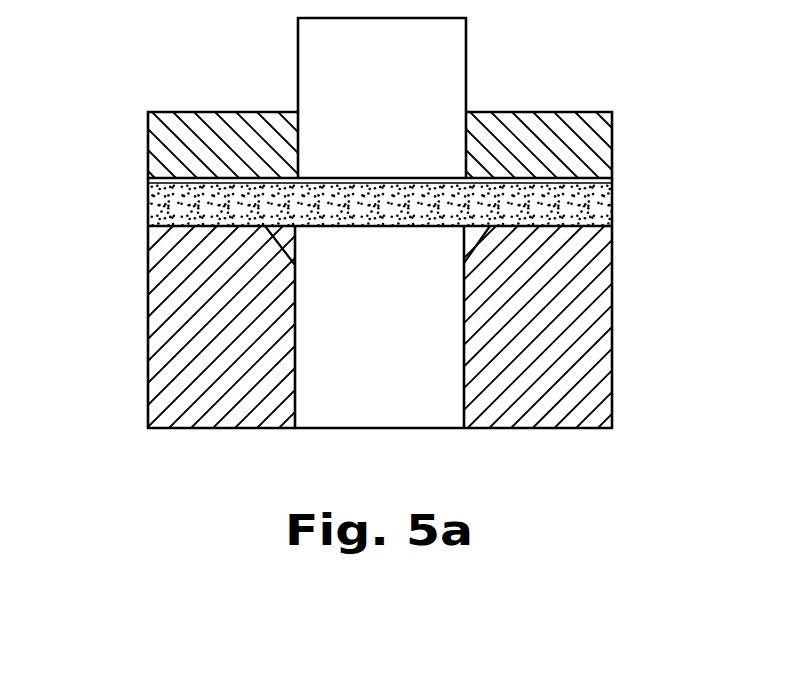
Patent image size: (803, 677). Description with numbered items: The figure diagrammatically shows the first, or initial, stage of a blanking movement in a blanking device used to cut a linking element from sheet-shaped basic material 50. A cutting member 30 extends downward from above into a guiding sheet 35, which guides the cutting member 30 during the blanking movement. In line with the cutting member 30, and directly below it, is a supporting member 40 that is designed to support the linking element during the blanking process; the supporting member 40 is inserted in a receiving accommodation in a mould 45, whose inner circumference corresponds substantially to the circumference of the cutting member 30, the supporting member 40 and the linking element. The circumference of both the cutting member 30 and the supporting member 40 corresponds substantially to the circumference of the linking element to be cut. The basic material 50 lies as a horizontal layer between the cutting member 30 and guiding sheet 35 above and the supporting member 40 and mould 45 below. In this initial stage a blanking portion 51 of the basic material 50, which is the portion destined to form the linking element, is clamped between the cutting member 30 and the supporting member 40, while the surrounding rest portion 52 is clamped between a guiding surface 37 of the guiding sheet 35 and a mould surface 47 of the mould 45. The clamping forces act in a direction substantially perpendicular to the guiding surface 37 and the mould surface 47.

The cutting member 30 is at (453, 67).
The guiding sheet 35 is at (604, 131).
The basic material 50 is at (590, 198).
The rest portion 52 is at (235, 207).
The blanking portion 51 is at (384, 210).
The guiding surface 37 is at (190, 195).
The mould surface 47 is at (185, 222).
The mould 45 is at (195, 328).
The supporting member 40 is at (420, 355).